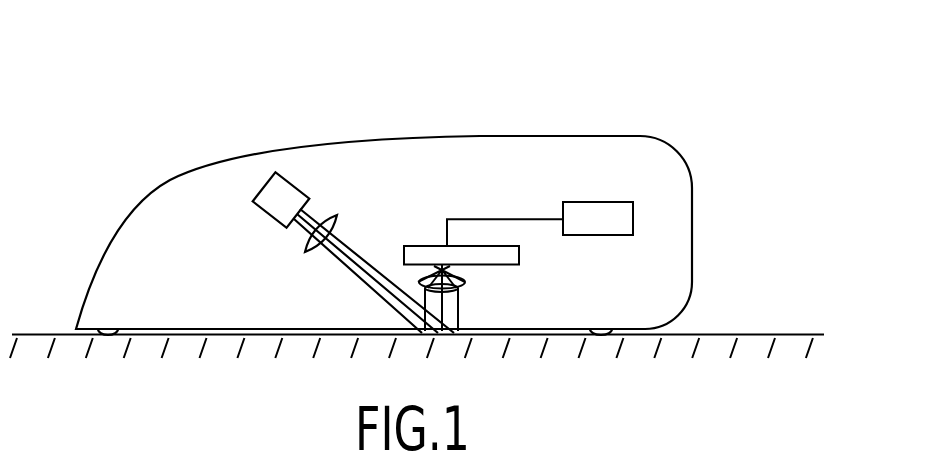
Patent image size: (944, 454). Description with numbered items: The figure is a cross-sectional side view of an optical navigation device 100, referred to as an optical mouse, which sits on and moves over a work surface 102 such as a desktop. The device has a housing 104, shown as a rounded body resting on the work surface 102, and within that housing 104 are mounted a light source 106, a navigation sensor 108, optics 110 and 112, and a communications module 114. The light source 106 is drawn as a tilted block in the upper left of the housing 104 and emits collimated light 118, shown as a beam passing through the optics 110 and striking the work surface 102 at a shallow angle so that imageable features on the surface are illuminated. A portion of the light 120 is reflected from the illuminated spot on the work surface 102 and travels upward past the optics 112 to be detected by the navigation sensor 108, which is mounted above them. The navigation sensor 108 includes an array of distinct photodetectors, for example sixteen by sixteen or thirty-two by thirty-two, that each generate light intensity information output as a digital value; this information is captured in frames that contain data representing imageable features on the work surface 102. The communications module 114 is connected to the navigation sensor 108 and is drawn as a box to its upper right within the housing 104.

The optical navigation device 100 is at (560, 33).
The work surface 102 is at (759, 333).
The housing 104 is at (573, 136).
The light source 106 is at (302, 193).
The navigation sensor 108 is at (520, 252).
The optics 110 is at (304, 249).
The optics 112 is at (460, 277).
The communications module 114 is at (633, 219).
The collimated light 118 is at (358, 283).
The reflected light 120 is at (458, 310).